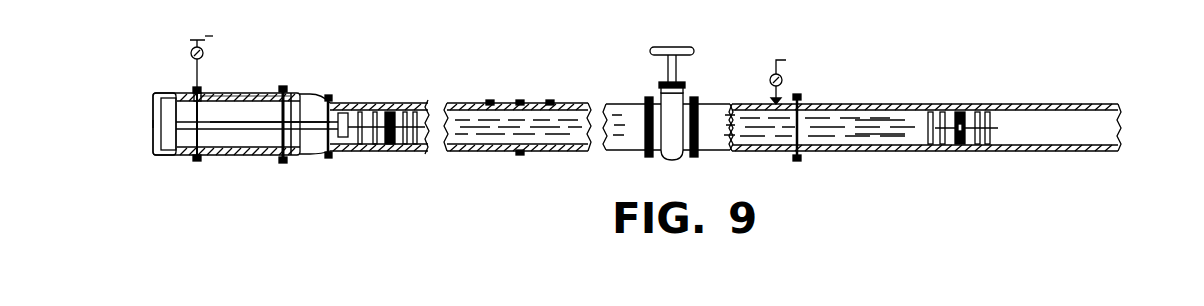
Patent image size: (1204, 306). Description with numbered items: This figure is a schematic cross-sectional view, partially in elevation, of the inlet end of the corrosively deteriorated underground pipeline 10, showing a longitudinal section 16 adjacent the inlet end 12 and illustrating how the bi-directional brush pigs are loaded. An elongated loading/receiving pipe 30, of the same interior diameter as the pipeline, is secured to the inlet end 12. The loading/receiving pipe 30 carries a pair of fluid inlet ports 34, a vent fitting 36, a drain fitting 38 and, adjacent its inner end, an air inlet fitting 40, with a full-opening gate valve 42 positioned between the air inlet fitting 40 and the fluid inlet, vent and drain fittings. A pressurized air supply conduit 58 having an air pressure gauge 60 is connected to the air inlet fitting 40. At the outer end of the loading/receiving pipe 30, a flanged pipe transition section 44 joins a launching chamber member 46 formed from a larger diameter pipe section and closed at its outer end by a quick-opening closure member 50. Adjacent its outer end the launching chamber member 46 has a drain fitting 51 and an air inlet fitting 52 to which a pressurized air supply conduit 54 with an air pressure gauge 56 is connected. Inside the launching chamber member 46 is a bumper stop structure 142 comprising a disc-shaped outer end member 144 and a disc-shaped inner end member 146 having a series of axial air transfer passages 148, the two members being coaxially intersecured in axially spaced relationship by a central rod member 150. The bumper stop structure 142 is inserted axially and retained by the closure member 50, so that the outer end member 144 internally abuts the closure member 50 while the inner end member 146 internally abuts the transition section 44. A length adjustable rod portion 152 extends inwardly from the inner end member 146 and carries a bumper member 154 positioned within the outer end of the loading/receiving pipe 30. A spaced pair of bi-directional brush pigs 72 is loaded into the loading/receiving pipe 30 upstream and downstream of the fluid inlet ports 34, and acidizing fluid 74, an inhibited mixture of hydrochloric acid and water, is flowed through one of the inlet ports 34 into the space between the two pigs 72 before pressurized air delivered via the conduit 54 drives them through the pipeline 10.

The pipeline 10 is at (1090, 96).
The inlet end 12 is at (825, 150).
The longitudinal section 16 is at (1062, 153).
The loading/receiving pipe 30 is at (488, 158).
The fluid inlet ports 34 is at (488, 101).
The vent fitting 36 is at (520, 101).
The drain fitting 38 is at (522, 153).
The air inlet fitting 40 is at (785, 99).
The full-opening gate valve 42 is at (659, 84).
The flanged pipe transition section 44 is at (310, 102).
The launching chamber member 46 is at (242, 93).
The quick-opening closure member 50 is at (158, 134).
The drain fitting 51 is at (145, 165).
The air inlet fitting 52 is at (193, 92).
The pressurized air supply conduit 54 is at (215, 42).
The air pressure gauge 56 is at (191, 52).
The pressurized air supply conduit 58 is at (792, 64).
The air pressure gauge 60 is at (784, 78).
The bi-directional brush pig 72 is at (409, 152).
The acidizing fluid 74 is at (866, 130).
The bumper stop structure 142 is at (246, 135).
The outer end member 144 is at (163, 111).
The inner end member 146 is at (276, 136).
The air transfer passages 148 is at (280, 93).
The central rod member 150 is at (212, 123).
The length adjustable rod portion 152 is at (342, 118).
The bumper member 154 is at (346, 108).